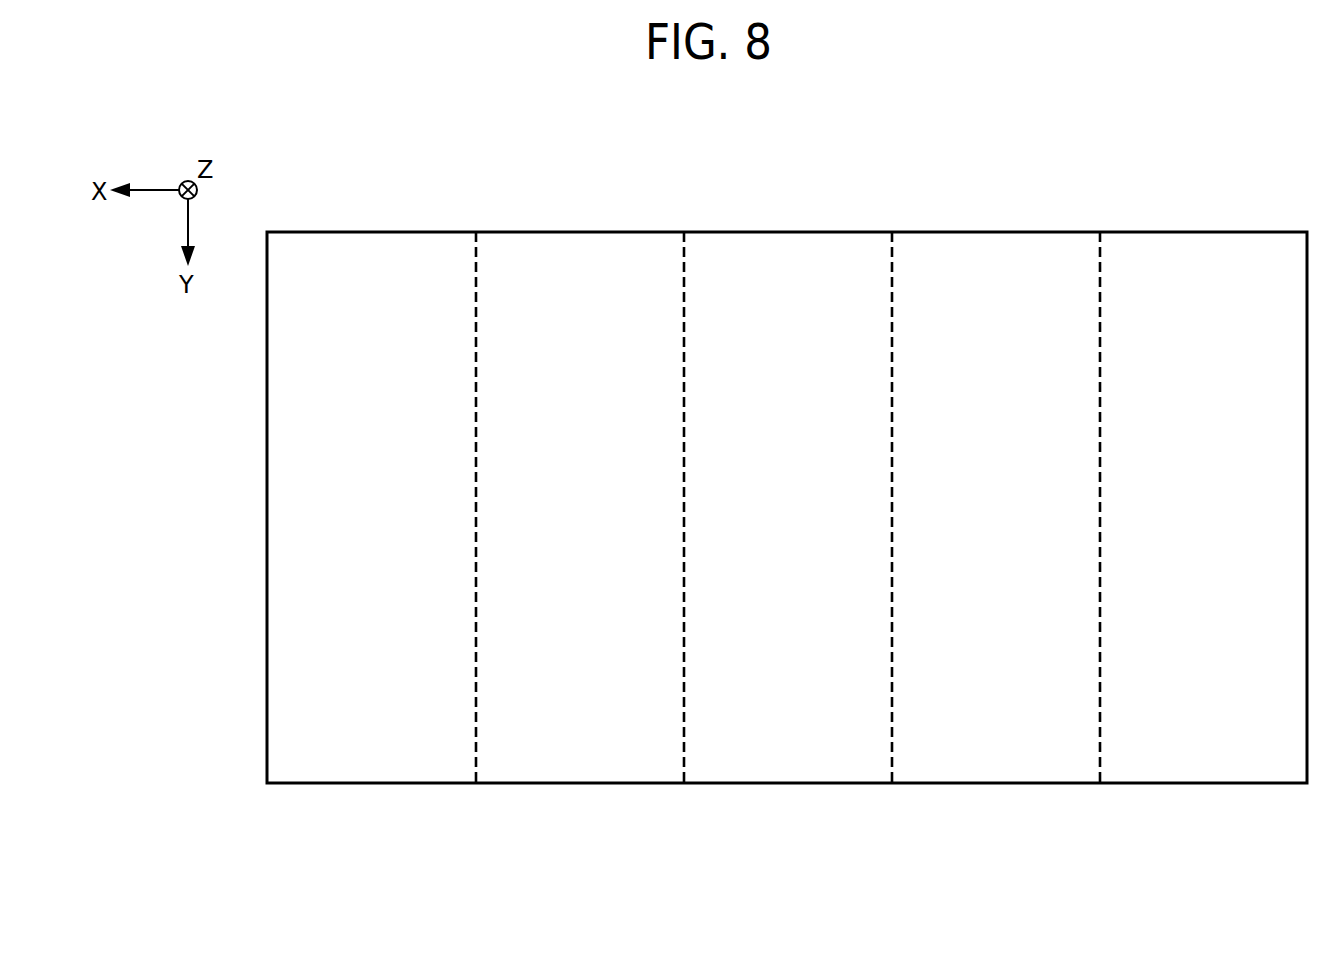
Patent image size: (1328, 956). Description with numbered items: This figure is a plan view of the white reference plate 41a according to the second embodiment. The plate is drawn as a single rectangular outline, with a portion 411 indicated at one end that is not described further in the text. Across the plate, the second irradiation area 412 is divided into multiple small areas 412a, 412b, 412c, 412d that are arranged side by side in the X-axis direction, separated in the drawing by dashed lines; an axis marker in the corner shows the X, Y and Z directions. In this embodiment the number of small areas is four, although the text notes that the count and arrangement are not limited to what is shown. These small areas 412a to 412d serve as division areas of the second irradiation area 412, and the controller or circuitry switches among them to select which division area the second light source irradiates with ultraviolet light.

The white reference plate 41a is at (778, 184).
The base portion 411 is at (1196, 784).
The second irradiation area 412 is at (714, 582).
The small area 412a is at (1028, 550).
The small area 412b is at (780, 784).
The small area 412c is at (573, 784).
The small area 412d is at (365, 784).